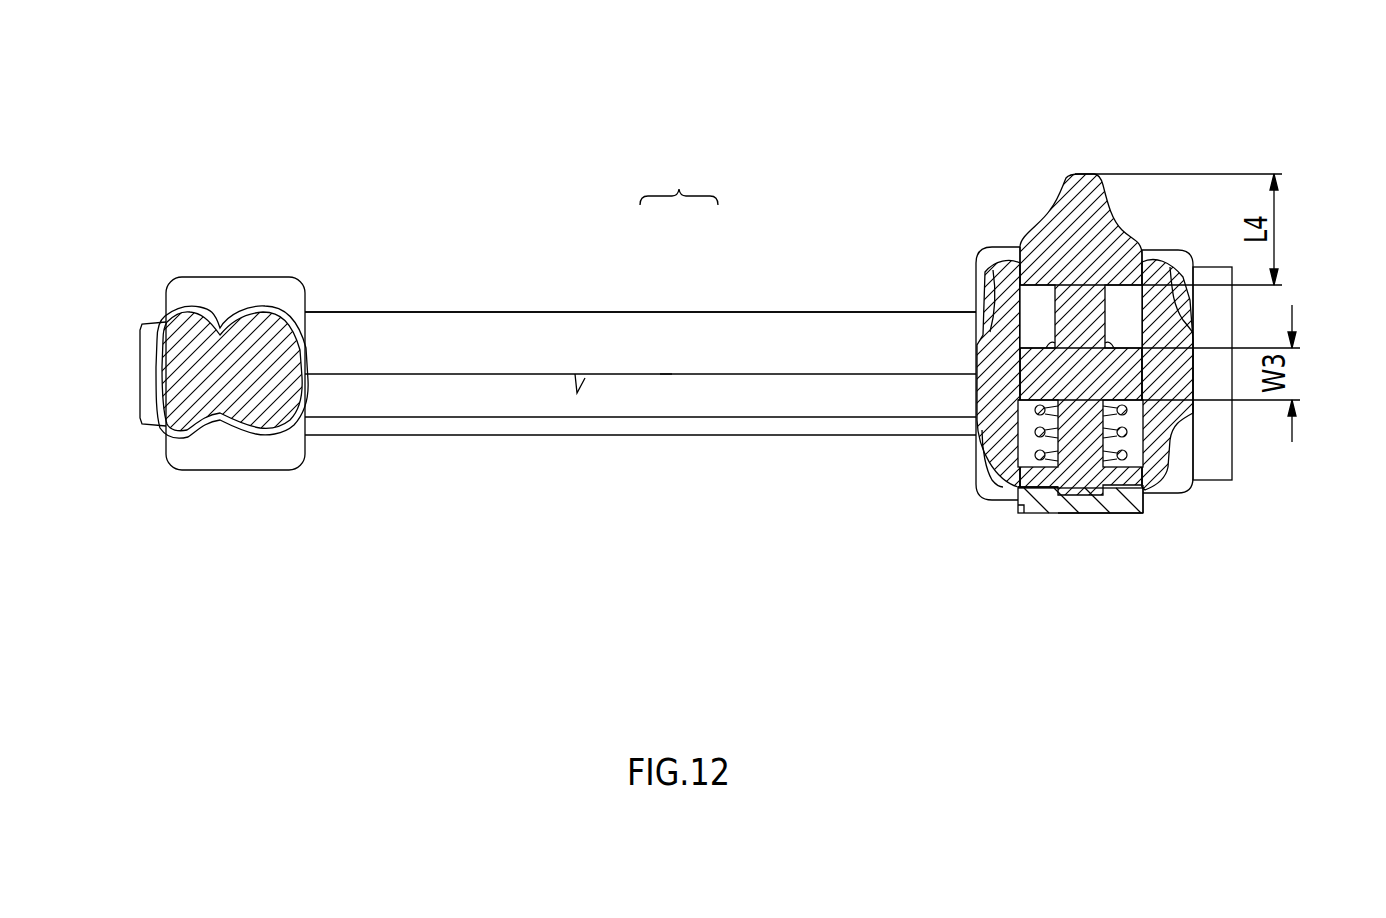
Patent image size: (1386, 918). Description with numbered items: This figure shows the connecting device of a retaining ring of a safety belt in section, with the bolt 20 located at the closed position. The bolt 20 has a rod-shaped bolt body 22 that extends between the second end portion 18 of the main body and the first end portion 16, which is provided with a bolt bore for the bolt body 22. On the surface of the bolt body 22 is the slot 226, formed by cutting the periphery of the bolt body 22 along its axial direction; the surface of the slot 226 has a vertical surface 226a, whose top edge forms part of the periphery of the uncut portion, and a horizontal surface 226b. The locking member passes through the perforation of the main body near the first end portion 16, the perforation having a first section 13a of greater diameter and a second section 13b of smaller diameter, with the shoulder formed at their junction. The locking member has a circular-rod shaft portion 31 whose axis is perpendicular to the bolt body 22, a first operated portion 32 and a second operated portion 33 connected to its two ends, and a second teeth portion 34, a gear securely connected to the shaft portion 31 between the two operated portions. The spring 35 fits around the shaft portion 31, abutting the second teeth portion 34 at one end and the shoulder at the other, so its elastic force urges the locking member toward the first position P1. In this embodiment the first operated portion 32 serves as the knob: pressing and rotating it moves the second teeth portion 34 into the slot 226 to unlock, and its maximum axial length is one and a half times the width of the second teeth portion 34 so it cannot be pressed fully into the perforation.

The second end portion 18 is at (168, 283).
The bolt body 22 is at (395, 311).
The bolt 20 is at (523, 270).
The slot 226 is at (679, 177).
The vertical surface 226a is at (578, 392).
The horizontal surface 226b is at (666, 393).
The first end portion 16 is at (986, 247).
The first operated portion 32 is at (1078, 223).
The shaft portion 31 is at (1077, 315).
The second teeth portion 34 is at (1000, 385).
The first section 13a is at (1142, 322).
The second section 13b is at (1143, 490).
The second operated portion 33 is at (1060, 507).
The spring 35 is at (1040, 470).
The first position P1 is at (1112, 515).